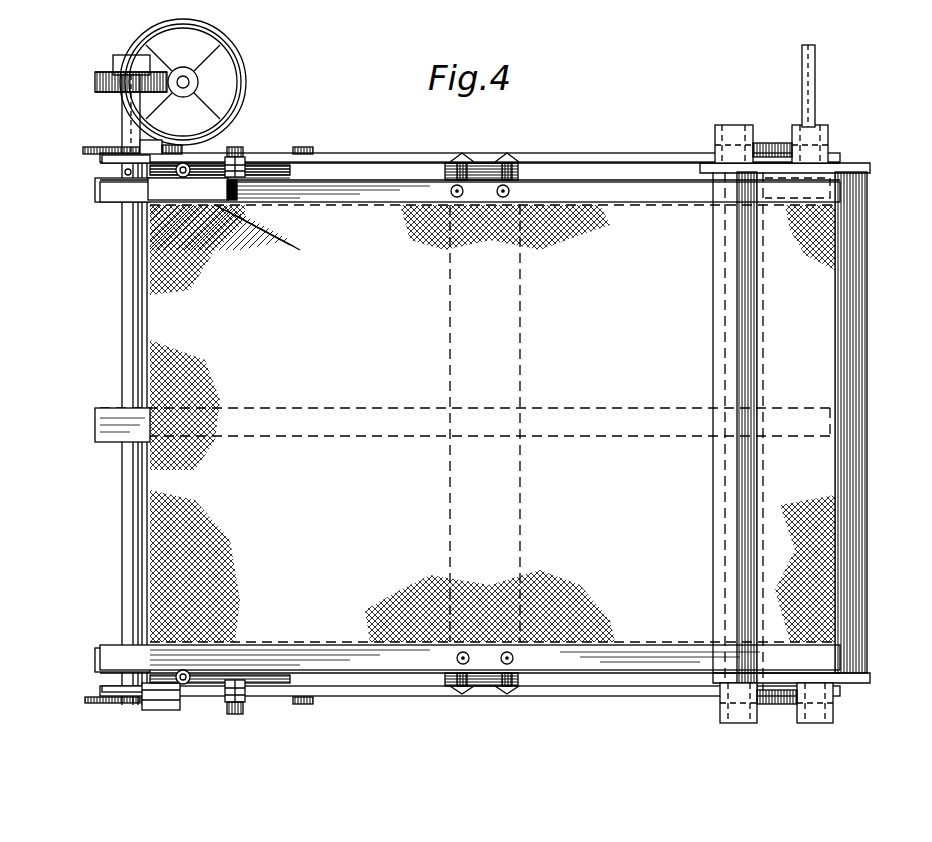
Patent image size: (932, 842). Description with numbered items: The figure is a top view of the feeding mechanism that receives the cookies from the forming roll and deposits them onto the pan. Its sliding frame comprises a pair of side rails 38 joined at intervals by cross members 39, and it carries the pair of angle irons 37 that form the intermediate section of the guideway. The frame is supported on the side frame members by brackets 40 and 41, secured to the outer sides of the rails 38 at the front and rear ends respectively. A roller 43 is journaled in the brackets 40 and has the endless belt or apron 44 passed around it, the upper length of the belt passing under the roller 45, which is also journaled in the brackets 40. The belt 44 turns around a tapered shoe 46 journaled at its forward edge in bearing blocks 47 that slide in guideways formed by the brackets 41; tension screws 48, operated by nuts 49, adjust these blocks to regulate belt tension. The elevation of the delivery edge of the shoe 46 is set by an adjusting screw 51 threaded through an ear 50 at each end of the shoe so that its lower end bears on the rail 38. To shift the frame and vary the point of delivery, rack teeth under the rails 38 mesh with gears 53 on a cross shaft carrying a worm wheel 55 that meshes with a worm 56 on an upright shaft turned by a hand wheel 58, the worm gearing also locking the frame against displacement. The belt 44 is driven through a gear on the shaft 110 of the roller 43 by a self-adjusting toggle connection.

The angle irons 37 is at (96, 190).
The side rails 38 is at (340, 160).
The cross members 39 is at (520, 298).
The brackets 40 is at (765, 148).
The brackets 41 is at (303, 147).
The roller 43 is at (868, 665).
The endless belt 44 is at (492, 423).
The roller 45 is at (714, 266).
The tapered shoe 46 is at (237, 212).
The bearing blocks 47 is at (237, 165).
The tension screws 48 is at (95, 147).
The nuts 49 is at (140, 145).
The ear 50 is at (178, 178).
The adjusting screw 51 is at (228, 215).
The gears 53 is at (100, 158).
The worm wheel 55 is at (96, 83).
The worm 56 is at (200, 70).
The hand wheel 58 is at (246, 82).
The shaft 110 is at (815, 98).